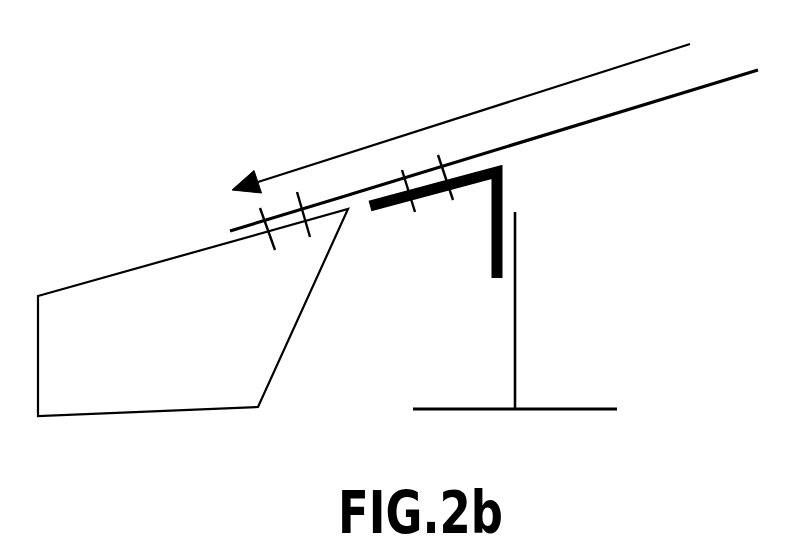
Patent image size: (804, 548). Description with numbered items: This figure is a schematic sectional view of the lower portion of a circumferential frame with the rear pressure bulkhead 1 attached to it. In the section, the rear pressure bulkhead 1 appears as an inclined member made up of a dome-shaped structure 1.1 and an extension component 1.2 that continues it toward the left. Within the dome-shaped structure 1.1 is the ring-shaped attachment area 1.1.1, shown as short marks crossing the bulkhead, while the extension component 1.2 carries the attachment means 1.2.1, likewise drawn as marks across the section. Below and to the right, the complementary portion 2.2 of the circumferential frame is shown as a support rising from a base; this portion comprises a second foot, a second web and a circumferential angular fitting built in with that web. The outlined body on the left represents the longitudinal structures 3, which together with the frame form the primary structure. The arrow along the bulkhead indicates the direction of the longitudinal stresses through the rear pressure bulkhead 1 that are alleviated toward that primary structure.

The rear pressure bulkhead 1 is at (496, 93).
The dome-shaped structure 1.1 is at (588, 120).
The ring-shaped attachment area 1.1.1 is at (412, 159).
The extension component 1.2 is at (237, 222).
The attachment means 1.2.1 is at (279, 196).
The complementary portion 2.2 is at (541, 369).
The longitudinal structures 3 is at (133, 391).